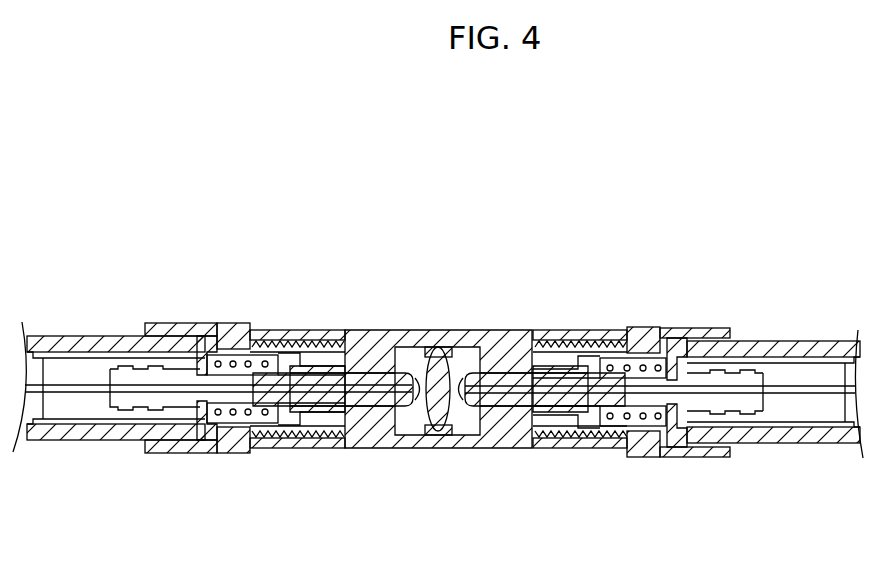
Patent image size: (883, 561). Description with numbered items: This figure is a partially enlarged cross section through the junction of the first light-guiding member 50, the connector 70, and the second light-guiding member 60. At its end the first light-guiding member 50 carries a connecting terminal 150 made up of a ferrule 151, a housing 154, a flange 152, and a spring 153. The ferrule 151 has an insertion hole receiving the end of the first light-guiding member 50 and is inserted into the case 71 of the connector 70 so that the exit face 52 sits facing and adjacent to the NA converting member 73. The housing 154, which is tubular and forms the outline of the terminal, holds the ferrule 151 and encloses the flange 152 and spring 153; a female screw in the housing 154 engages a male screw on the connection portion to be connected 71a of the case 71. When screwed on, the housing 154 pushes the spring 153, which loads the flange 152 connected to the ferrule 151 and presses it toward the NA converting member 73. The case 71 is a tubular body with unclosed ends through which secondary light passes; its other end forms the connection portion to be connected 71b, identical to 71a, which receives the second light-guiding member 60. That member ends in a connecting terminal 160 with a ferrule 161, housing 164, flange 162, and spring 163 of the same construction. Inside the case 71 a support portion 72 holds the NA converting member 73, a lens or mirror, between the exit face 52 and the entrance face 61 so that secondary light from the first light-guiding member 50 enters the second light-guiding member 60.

The first light-guiding member 50 is at (170, 388).
The exit face 52 is at (406, 400).
The second light-guiding member 60 is at (706, 393).
The entrance face 61 is at (478, 400).
The connector 70 is at (438, 376).
The case 71 is at (370, 342).
The connection portion to be connected 71a is at (312, 340).
The connection portion to be connected 71b is at (555, 338).
The support portion 72 is at (437, 432).
The NA converting member 73 is at (437, 360).
The connecting terminal 150 is at (164, 322).
The ferrule 151 is at (322, 402).
The flange 152 is at (277, 418).
The spring 153 is at (236, 415).
The housing 154 is at (252, 332).
The connecting terminal 160 is at (714, 328).
The ferrule 161 is at (556, 407).
The flange 162 is at (600, 408).
The spring 163 is at (640, 418).
The housing 164 is at (645, 338).